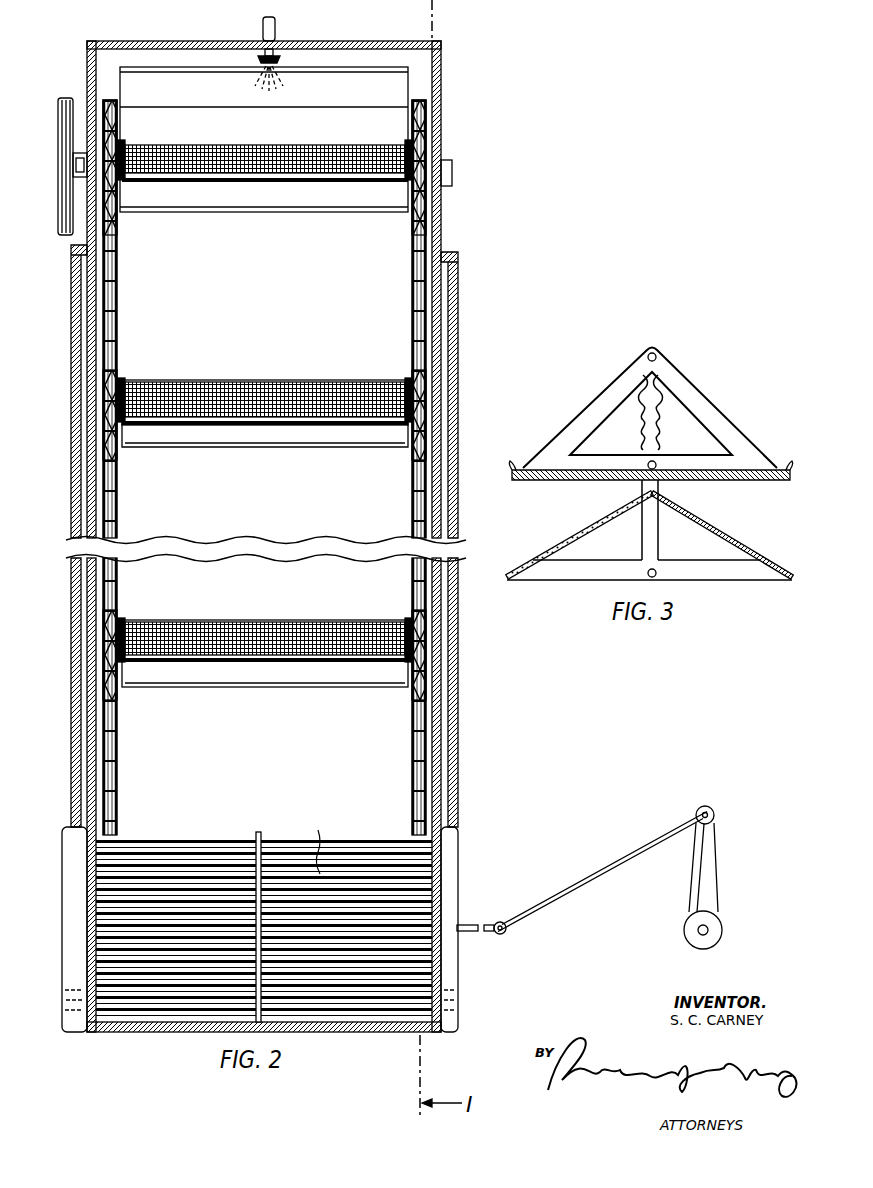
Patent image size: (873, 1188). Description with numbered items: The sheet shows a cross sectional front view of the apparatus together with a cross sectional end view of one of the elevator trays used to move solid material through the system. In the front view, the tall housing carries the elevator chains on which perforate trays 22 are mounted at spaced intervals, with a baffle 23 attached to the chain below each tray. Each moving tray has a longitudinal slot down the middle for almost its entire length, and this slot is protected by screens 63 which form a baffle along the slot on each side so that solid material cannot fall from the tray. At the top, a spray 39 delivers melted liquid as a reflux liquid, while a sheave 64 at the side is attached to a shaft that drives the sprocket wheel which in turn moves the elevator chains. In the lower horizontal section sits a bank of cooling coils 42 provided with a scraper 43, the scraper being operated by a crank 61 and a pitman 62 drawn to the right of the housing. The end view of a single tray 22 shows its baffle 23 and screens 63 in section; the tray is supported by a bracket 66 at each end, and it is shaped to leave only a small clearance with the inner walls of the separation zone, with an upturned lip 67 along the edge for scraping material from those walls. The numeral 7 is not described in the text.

In FIG. 2, the conveyor chain 7 is at (120, 304).
In FIG. 2, the spray 39 is at (275, 50).
In FIG. 2, the sheave 64 is at (58, 208).
In FIG. 2, the perforate trays 22 is at (128, 385).
In FIG. 3, the perforate trays 22 is at (578, 480).
In FIG. 2, the screens 63 is at (272, 388).
In FIG. 3, the screens 63 is at (661, 452).
In FIG. 2, the baffle 23 is at (246, 445).
In FIG. 3, the baffle 23 is at (760, 565).
In FIG. 2, the cooling coils 42 is at (322, 839).
In FIG. 2, the scraper 43 is at (256, 837).
In FIG. 2, the pitman 62 is at (569, 895).
In FIG. 2, the crank 61 is at (688, 891).
In FIG. 3, the bracket 66 is at (748, 439).
In FIG. 3, the upturned lip 67 is at (791, 481).